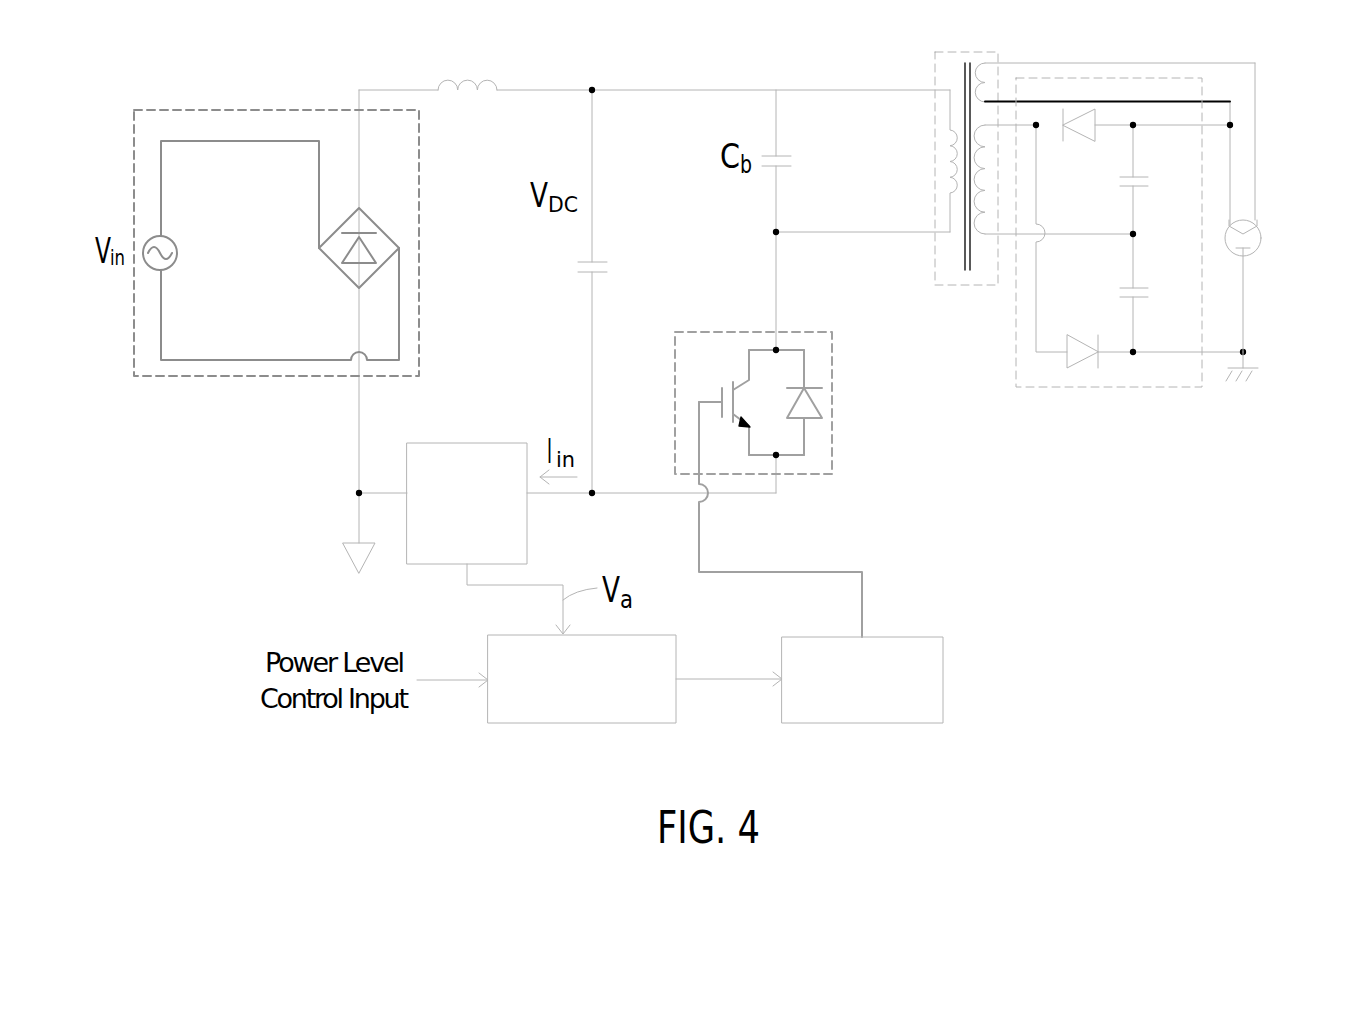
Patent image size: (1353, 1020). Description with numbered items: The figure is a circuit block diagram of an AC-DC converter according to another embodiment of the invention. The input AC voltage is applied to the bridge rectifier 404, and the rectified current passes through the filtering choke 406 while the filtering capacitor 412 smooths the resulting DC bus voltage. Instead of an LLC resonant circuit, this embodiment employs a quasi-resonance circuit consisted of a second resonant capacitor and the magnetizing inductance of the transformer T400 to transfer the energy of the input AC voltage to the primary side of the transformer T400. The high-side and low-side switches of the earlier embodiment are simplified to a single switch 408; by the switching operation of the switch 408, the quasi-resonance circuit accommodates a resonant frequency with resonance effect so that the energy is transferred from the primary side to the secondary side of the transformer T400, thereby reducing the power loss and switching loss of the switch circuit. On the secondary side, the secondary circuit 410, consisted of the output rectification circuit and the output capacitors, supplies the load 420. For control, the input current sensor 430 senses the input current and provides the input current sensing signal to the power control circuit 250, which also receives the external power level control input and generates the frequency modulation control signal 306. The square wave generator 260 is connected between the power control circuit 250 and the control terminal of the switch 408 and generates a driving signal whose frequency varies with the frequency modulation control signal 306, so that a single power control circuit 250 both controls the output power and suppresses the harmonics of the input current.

The bridge rectifier 404 is at (377, 227).
The filtering choke 406 is at (465, 97).
The filtering capacitor 412 is at (583, 283).
The transformer T400 is at (935, 70).
The secondary circuit 410 is at (1165, 72).
The load 420 is at (1262, 240).
The switch 408 is at (835, 417).
The input current sensor 430 is at (468, 443).
The power control circuit 250 is at (563, 723).
The frequency modulation control signal 306 is at (688, 678).
The square wave generator 260 is at (943, 678).